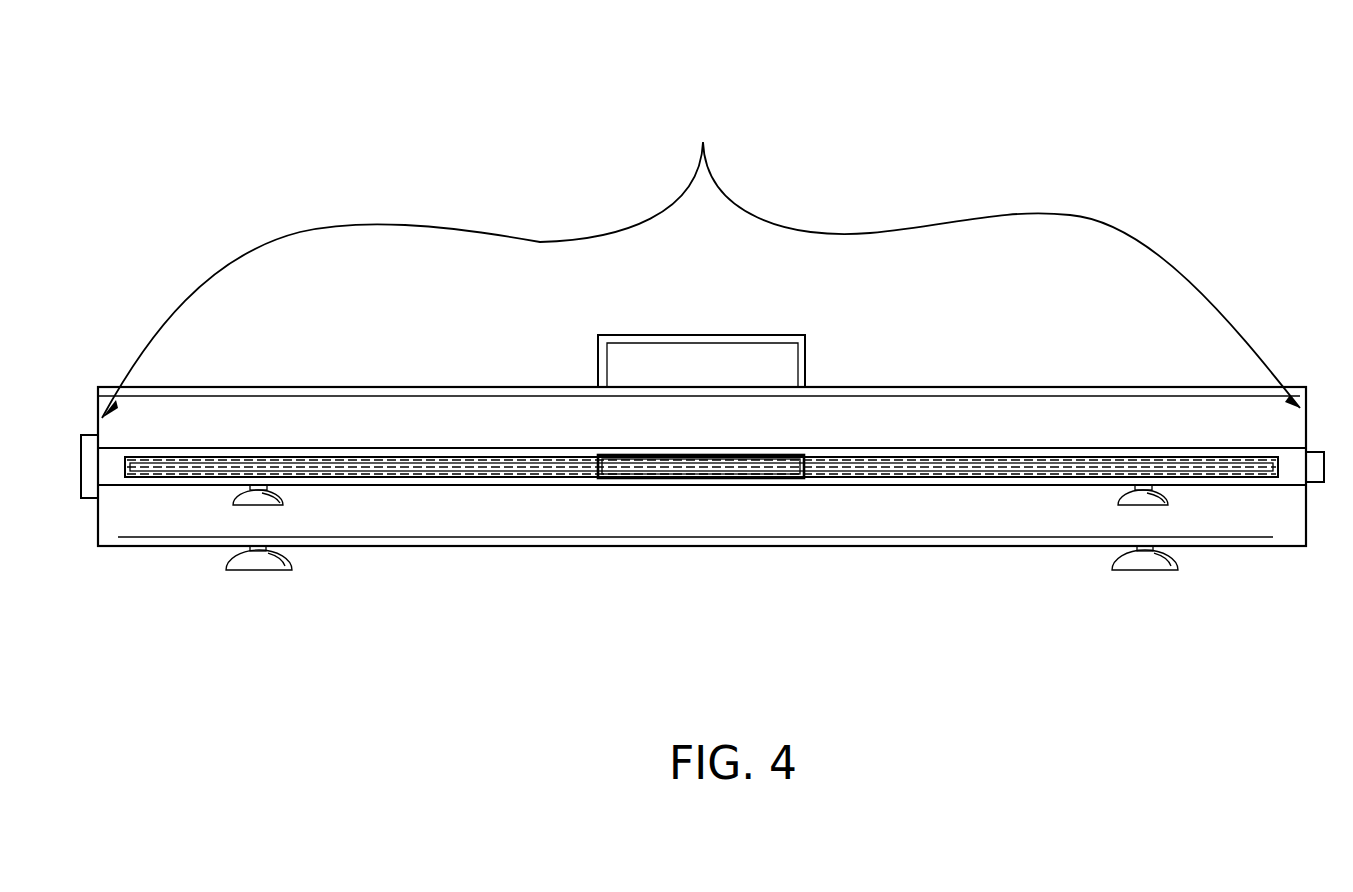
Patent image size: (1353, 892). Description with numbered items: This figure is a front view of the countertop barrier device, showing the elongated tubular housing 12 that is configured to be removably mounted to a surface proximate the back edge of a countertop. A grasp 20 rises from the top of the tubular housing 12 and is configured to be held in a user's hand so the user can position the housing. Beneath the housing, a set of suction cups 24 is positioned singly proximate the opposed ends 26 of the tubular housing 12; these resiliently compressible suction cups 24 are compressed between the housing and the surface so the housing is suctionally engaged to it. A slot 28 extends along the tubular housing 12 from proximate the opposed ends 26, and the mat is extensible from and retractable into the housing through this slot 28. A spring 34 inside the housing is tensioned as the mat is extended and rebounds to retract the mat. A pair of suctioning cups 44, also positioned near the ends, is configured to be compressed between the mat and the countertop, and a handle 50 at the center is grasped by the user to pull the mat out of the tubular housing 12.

The tubular housing 12 is at (1147, 387).
The grasp 20 is at (658, 333).
The suction cups 24 is at (259, 562).
The opposed ends 26 is at (701, 253).
The slot 28 is at (919, 480).
The spring 34 is at (433, 488).
The suctioning cups 44 is at (267, 495).
The handle 50 is at (709, 480).